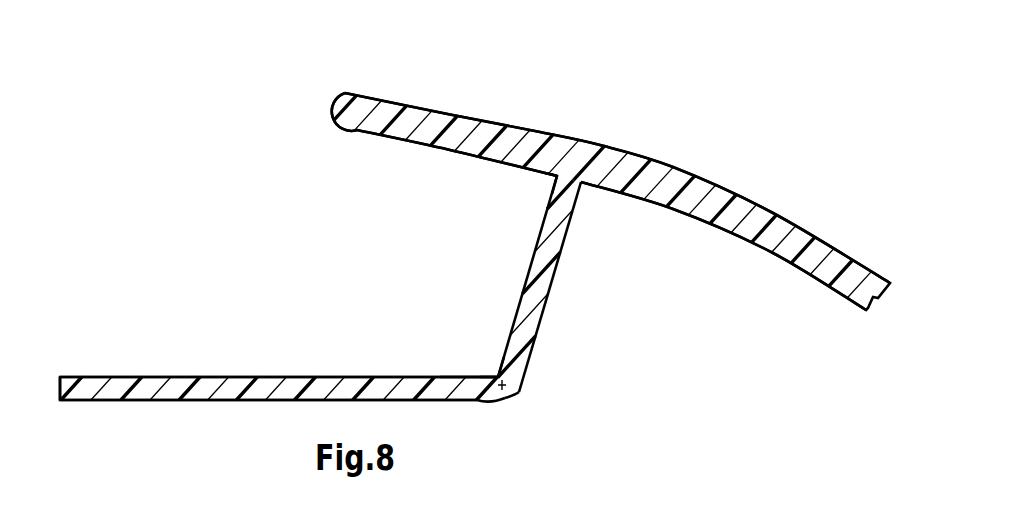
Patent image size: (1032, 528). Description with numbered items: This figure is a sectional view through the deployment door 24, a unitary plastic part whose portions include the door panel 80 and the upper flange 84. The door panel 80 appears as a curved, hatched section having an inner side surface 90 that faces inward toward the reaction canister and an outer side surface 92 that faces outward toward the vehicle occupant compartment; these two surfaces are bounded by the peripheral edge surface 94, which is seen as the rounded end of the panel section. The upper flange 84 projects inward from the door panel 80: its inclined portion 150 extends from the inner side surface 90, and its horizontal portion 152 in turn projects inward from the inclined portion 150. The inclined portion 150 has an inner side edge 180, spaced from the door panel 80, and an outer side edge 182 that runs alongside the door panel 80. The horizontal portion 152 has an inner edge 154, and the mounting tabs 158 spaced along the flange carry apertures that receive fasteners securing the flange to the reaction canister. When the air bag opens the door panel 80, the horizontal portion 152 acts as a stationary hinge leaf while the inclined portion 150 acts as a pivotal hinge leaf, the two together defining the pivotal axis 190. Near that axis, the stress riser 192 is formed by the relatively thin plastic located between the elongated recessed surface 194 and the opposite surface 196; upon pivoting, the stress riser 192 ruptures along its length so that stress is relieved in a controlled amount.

The deployment door 24 is at (653, 98).
The door panel 80 is at (373, 93).
The outer side surface 92 is at (423, 104).
The peripheral edge surface 94 is at (336, 99).
The inner side surface 90 is at (413, 148).
The inclined portion 150 is at (532, 262).
The outer side edge 182 is at (556, 178).
The upper flange 84 is at (298, 378).
The horizontal portion 152 is at (218, 376).
The inner edge 154 is at (60, 387).
The mounting tabs 158 is at (148, 388).
The inner side edge 180 is at (498, 375).
The opposite surface 196 is at (492, 376).
The pivotal axis 190 is at (500, 379).
The stress riser 192 is at (488, 401).
The elongated recessed surface 194 is at (509, 397).